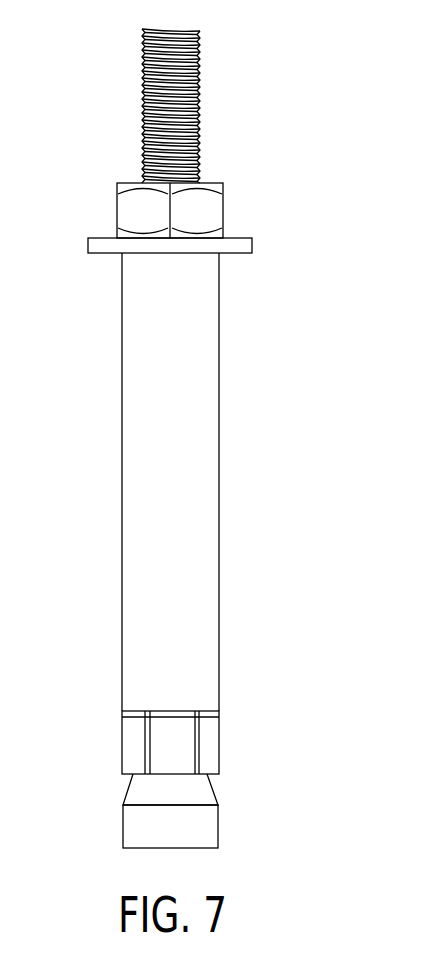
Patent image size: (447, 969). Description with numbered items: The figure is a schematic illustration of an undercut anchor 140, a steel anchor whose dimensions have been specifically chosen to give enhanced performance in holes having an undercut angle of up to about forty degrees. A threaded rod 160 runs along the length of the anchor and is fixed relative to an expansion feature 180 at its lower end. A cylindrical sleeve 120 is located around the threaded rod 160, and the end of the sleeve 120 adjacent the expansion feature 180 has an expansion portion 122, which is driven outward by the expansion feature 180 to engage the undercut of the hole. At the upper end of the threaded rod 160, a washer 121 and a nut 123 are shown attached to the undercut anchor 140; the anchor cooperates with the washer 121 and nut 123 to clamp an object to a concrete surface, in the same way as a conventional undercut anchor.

The threaded rod 160 is at (199, 104).
The nut 123 is at (215, 203).
The washer 121 is at (245, 247).
The cylindrical sleeve 120 is at (134, 525).
The undercut anchor 140 is at (275, 423).
The expansion portion 122 is at (212, 748).
The expansion feature 180 is at (210, 827).